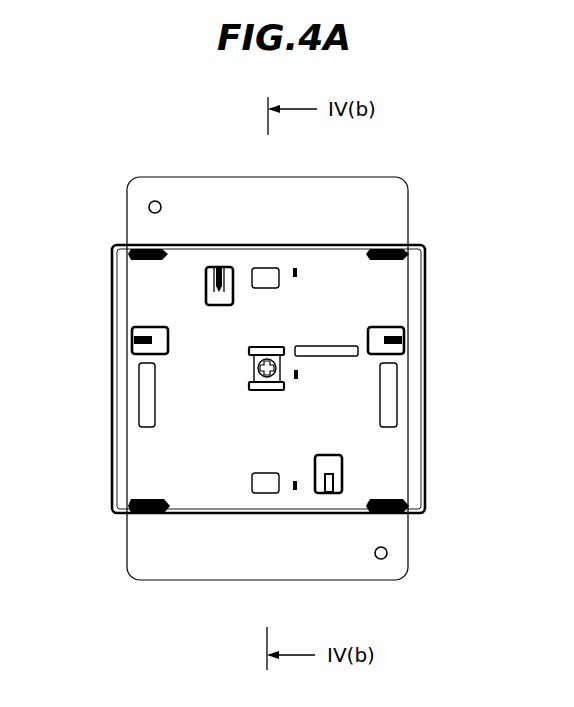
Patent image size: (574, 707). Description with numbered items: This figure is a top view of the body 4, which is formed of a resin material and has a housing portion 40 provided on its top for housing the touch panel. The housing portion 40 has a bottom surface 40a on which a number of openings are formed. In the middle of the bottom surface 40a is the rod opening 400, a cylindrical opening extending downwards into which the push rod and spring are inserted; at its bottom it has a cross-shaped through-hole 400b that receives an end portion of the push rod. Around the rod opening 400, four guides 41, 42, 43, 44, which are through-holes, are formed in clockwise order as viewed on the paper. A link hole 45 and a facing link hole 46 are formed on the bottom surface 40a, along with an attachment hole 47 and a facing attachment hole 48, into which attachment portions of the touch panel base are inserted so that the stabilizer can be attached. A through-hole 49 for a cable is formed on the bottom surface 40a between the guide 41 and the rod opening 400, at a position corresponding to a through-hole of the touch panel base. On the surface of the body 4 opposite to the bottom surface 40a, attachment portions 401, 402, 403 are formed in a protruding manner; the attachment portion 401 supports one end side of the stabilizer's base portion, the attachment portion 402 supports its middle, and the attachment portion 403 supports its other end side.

The body 4 is at (456, 131).
The housing portion 40 is at (412, 287).
The bottom surface 40a is at (397, 438).
The guide 41 is at (392, 332).
The guide 42 is at (330, 467).
The guide 43 is at (145, 333).
The guide 44 is at (213, 295).
The link hole 45 is at (392, 392).
The link hole 46 is at (146, 396).
The attachment hole 47 is at (265, 274).
The attachment hole 48 is at (266, 488).
The through-hole 49 is at (340, 347).
The rod opening 400 is at (153, 395).
The cross-shaped through-hole 400b is at (252, 362).
The attachment portion 401 is at (298, 272).
The attachment portion 402 is at (299, 374).
The attachment portion 403 is at (296, 489).